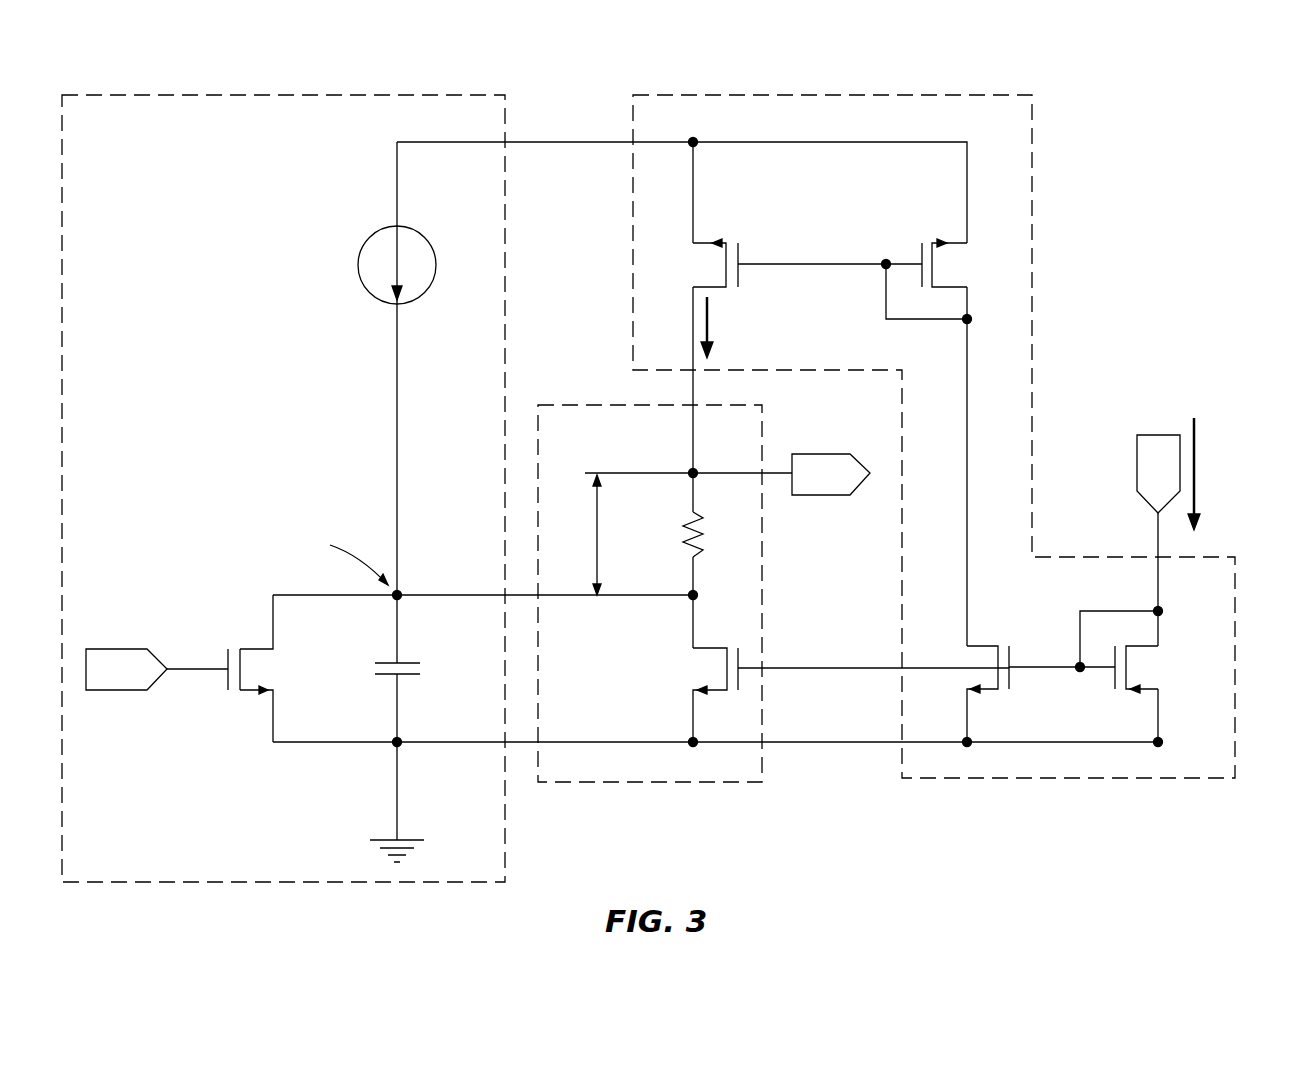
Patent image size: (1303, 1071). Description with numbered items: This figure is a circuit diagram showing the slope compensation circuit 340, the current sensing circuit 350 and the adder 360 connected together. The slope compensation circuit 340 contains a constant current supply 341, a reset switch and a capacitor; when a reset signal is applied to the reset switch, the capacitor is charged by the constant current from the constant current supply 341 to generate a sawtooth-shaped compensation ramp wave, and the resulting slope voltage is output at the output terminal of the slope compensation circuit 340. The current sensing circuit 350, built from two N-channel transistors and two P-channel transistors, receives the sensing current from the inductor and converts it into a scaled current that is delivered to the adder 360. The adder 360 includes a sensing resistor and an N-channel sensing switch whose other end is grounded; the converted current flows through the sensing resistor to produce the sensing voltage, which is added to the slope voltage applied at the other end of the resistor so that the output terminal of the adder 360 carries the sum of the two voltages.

The slope compensation circuit 340 is at (456, 92).
The constant current supply 341 is at (368, 237).
The current sensing circuit 350 is at (1201, 782).
The adder 360 is at (710, 785).